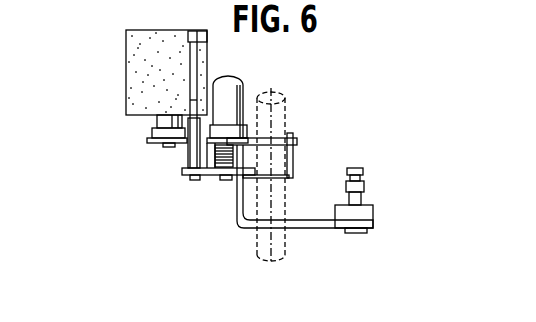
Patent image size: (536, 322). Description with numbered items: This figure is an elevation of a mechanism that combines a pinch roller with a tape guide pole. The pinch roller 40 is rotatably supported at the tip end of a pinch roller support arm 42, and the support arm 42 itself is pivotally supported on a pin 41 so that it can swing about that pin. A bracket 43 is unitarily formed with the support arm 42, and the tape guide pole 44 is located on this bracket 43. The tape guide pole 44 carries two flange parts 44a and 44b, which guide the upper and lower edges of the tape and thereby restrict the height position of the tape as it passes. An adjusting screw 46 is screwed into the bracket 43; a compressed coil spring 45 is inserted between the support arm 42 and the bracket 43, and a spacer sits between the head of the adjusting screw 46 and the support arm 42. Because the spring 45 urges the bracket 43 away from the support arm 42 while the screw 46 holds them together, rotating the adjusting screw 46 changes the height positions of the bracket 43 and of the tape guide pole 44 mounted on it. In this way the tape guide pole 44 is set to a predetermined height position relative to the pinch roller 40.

The pinch roller 40 is at (132, 57).
The pin 41 is at (281, 106).
The pinch roller support arm 42 is at (272, 140).
The bracket 43 is at (214, 177).
The tape guide pole 44 is at (199, 54).
The flange part 44a is at (187, 40).
The flange part 44b is at (190, 100).
The compressed coil spring 45 is at (212, 150).
The adjusting screw 46 is at (237, 84).